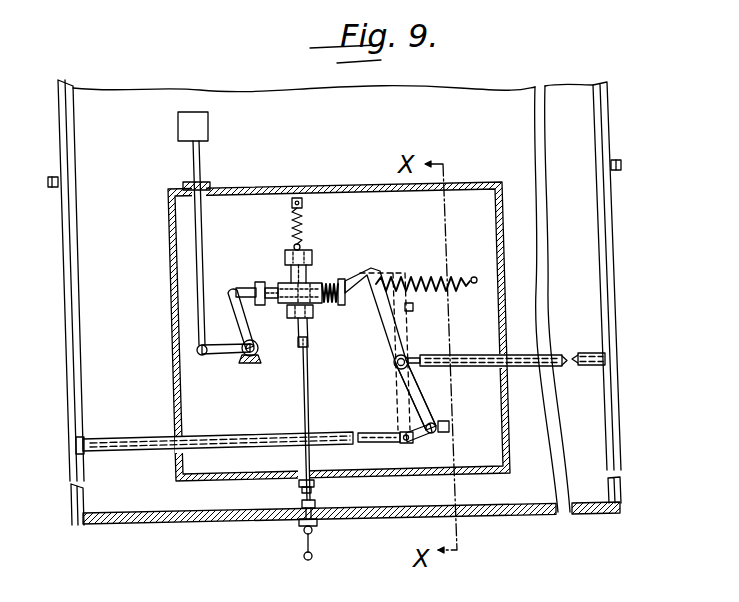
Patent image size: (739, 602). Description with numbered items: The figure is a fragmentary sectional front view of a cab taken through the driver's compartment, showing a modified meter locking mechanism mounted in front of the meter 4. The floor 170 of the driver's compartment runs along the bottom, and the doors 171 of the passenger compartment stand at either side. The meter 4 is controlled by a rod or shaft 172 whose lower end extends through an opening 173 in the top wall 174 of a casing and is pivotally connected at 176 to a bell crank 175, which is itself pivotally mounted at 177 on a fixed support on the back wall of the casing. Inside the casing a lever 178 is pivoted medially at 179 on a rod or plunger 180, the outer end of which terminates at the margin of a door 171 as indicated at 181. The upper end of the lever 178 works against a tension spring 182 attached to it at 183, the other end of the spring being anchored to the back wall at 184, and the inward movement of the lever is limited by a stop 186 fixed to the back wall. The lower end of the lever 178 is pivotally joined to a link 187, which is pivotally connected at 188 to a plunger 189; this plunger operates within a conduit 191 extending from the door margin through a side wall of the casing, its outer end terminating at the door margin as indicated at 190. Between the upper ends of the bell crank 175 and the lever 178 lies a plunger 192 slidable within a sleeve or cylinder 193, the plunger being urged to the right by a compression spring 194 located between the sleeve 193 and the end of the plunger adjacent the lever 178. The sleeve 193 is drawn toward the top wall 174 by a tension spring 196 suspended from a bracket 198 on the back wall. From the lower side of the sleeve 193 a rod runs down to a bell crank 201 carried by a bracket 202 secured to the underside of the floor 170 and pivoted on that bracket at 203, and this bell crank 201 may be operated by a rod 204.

The meter 4 is at (181, 130).
The floor 170 is at (362, 521).
The doors 171 is at (84, 352).
The rod or shaft 172 is at (201, 160).
The opening 173 is at (198, 197).
The wall 174 is at (269, 187).
The bell crank 175 is at (233, 337).
The pivotal connection 176 is at (200, 357).
The pivot on fixed support 177 is at (248, 356).
The lever 178 is at (382, 322).
The pivot 179 is at (395, 373).
The rod or plunger 180 is at (413, 354).
The outer end of plunger 181 is at (605, 366).
The tension spring 182 is at (425, 274).
The spring attachment 183 is at (376, 269).
The spring anchor 184 is at (480, 266).
The stop 186 is at (392, 358).
The link 187 is at (426, 440).
The pivotal connection 188 is at (396, 441).
The plunger 189 is at (372, 437).
The outer end of plunger 190 is at (81, 438).
The conduit 191 is at (239, 436).
The plunger 192 is at (271, 283).
The sleeve or cylinder 193 is at (281, 307).
The compression spring 194 is at (331, 283).
The tension spring 196 is at (303, 230).
The bracket 198 is at (303, 203).
The bell crank 201 is at (318, 542).
The bracket 202 is at (300, 523).
The pivot 203 is at (302, 531).
The rod 204 is at (308, 560).